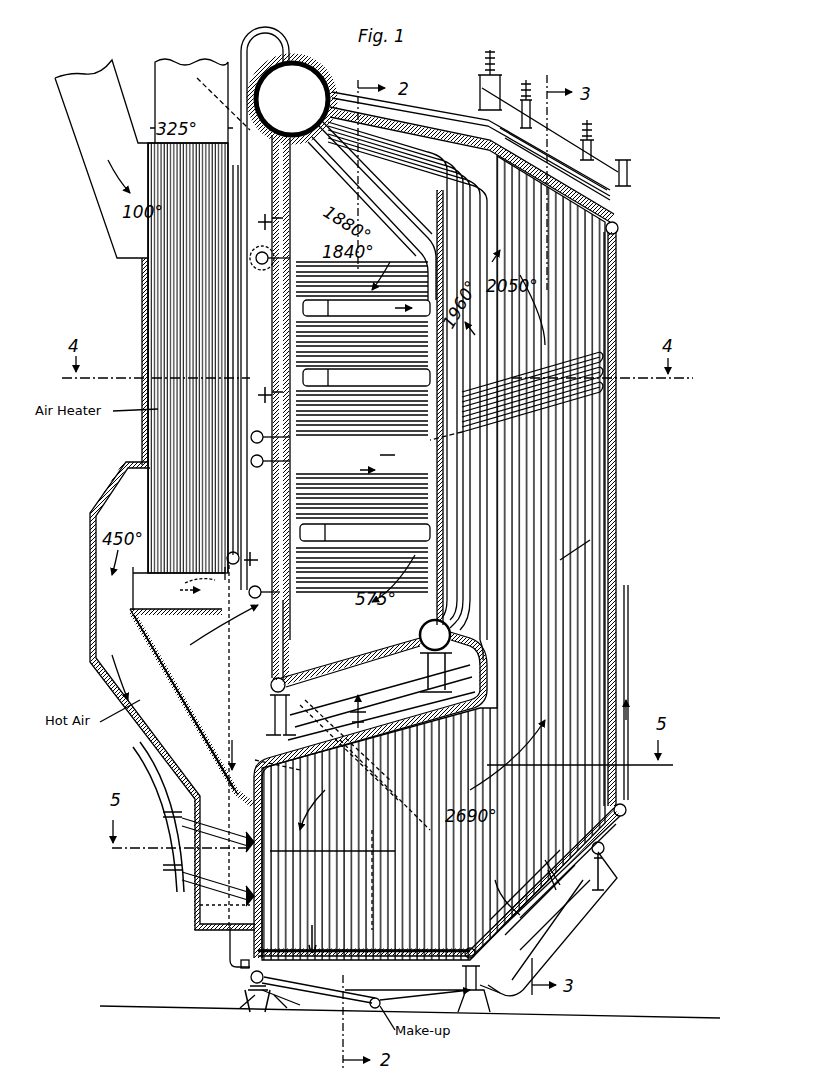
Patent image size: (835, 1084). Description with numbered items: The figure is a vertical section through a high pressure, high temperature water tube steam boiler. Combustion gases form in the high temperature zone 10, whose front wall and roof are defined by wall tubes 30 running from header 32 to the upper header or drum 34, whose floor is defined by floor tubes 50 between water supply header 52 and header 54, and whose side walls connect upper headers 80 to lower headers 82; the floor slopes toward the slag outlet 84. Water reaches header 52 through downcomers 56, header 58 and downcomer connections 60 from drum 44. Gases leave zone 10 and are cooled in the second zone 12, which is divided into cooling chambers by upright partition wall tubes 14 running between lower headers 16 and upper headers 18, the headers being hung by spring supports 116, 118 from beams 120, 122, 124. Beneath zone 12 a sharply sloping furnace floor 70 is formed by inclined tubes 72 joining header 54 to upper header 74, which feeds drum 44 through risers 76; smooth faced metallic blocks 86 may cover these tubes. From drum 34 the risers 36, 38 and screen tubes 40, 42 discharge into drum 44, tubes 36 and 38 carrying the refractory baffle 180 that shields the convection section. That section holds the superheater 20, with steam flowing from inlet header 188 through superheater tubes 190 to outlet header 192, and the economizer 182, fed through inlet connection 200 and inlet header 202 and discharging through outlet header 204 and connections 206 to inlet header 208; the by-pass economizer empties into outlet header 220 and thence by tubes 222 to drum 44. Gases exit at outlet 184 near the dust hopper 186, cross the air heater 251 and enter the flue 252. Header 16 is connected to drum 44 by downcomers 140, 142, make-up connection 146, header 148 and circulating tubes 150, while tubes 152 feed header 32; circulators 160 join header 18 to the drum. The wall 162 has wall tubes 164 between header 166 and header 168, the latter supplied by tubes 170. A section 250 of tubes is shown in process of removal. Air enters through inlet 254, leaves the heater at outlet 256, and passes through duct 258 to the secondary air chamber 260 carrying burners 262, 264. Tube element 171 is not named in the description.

The high temperature zone 10 is at (355, 839).
The second zone 12 is at (552, 628).
The upright partition wall tubes 14 is at (590, 540).
The headers 16 is at (575, 895).
The headers 18 is at (616, 212).
The superheater 20 is at (332, 418).
The wall tubes 30 is at (266, 826).
The header 32 is at (250, 978).
The upper header or drum 34 is at (426, 652).
The riser 36 is at (432, 620).
The riser 38 is at (447, 614).
The screen tube 40 is at (476, 598).
The screen tube 42 is at (470, 560).
The drum 44 is at (318, 86).
The floor tubes 50 is at (320, 1003).
The water supply header 52 is at (240, 962).
The header 54 is at (468, 948).
The downcomers 56 is at (226, 935).
The header 58 is at (238, 554).
The downcomer connections 60 is at (240, 362).
The furnace floor 70 is at (560, 866).
The inclined tubes 72 is at (618, 828).
The upper header 74 is at (627, 810).
The risers or discharge tubes 76 is at (629, 668).
The upper headers 80 is at (346, 712).
The lower headers 82 is at (282, 1010).
The slag outlet 84 is at (313, 935).
The smooth faced metallic blocks 86 is at (535, 900).
The spring support 116 is at (528, 88).
The spring support 118 is at (592, 146).
The beam 120 is at (590, 125).
The beam 122 is at (630, 168).
The beam 124 is at (480, 100).
The downcomer 140 is at (286, 650).
The downcomer 142 is at (284, 618).
The make-up connection 146 is at (380, 990).
The header 148 is at (375, 1010).
The circulating tubes 150 is at (516, 995).
The tubes 152 is at (272, 1008).
The circulators 160 is at (430, 108).
The wall 162 is at (618, 452).
The wall tubes 164 is at (618, 482).
The header 166 is at (619, 229).
The header 168 is at (606, 851).
The tubes 170 is at (620, 882).
The roof tubes 171 is at (440, 125).
The baffle 180 is at (439, 530).
The economizer 182 is at (375, 487).
The outlet 184 is at (270, 654).
The dust hopper 186 is at (186, 692).
The superheater inlet header 188 is at (252, 458).
The superheater tubes 190 is at (420, 304).
The superheater outlet header 192 is at (270, 252).
The inlet connection 200 is at (179, 588).
The inlet header 202 is at (211, 625).
The economizer outlet header 204 is at (272, 458).
The connections 206 is at (248, 444).
The inlet header 208 is at (250, 425).
The outlet header 220 is at (250, 272).
The tubes 222 is at (213, 99).
The section of superheater or economizer tubes 250 is at (598, 366).
The air heater 251 is at (152, 330).
The flue 252 is at (155, 70).
The inlet 254 is at (80, 140).
The outlet 256 is at (120, 515).
The duct 258 is at (110, 620).
The secondary air chamber 260 is at (200, 902).
The burner 262 is at (170, 870).
The burner 264 is at (170, 820).